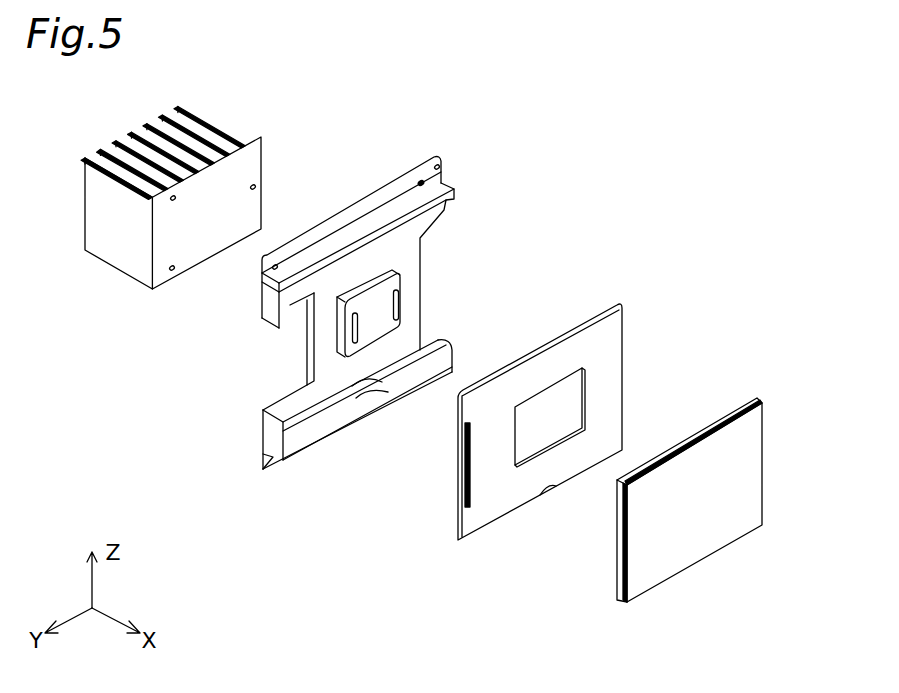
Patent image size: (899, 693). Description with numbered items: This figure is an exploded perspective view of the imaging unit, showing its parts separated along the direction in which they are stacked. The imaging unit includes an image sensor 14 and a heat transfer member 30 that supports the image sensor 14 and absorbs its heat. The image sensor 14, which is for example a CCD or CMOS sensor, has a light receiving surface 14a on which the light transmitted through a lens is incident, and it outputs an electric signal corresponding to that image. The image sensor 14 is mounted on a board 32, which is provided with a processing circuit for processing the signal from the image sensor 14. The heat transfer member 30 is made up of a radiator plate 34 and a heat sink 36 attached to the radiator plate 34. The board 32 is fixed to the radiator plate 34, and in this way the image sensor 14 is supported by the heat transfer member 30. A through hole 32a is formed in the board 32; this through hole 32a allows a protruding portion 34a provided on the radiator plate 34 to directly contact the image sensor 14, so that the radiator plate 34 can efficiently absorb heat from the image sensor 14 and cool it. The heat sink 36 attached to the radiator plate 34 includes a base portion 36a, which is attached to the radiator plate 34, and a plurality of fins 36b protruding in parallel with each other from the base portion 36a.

The image sensor 14 is at (745, 400).
The light receiving surface 14a is at (703, 528).
The heat transfer member 30 is at (152, 432).
The board 32 is at (617, 328).
The through hole 32a is at (550, 432).
The radiator plate 34 is at (270, 318).
The protruding portion 34a is at (398, 300).
The heat sink 36 is at (165, 285).
The base portion 36a is at (237, 142).
The fins 36b is at (120, 142).